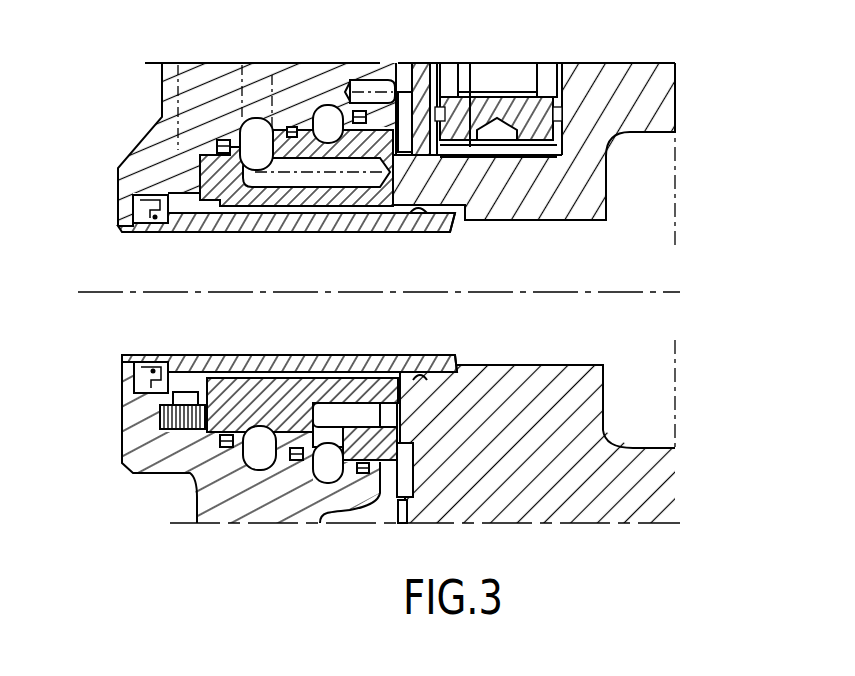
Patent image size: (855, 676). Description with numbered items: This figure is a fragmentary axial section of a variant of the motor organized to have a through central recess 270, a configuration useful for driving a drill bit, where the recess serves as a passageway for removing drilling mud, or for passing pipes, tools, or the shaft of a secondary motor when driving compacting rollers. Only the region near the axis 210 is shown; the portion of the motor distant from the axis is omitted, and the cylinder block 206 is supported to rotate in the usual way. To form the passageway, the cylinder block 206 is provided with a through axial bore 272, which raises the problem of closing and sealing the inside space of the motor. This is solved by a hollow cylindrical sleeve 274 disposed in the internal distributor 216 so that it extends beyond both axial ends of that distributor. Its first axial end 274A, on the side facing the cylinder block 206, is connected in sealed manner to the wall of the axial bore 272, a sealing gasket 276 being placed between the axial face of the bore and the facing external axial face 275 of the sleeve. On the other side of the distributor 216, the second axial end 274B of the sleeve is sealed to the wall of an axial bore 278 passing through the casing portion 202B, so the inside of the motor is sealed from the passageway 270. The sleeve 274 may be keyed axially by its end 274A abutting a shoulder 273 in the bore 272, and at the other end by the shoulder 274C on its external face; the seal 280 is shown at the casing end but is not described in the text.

The cylinder block 206 is at (617, 72).
The seal 280 is at (118, 190).
The axis 210 is at (88, 290).
The second axial end 274B is at (140, 232).
The hollow cylindrical sleeve 274 is at (310, 245).
The central recess 270 is at (418, 280).
The shoulder 273 is at (447, 232).
The through axial bore 272 is at (522, 232).
The internal distributor 216 is at (288, 395).
The sealing gasket 276 is at (398, 380).
The first axial end 274A is at (440, 356).
The external axial face 275 is at (462, 381).
The axial bore 278 is at (122, 362).
The shoulder 274C is at (147, 393).
The casing portion 202B is at (158, 463).